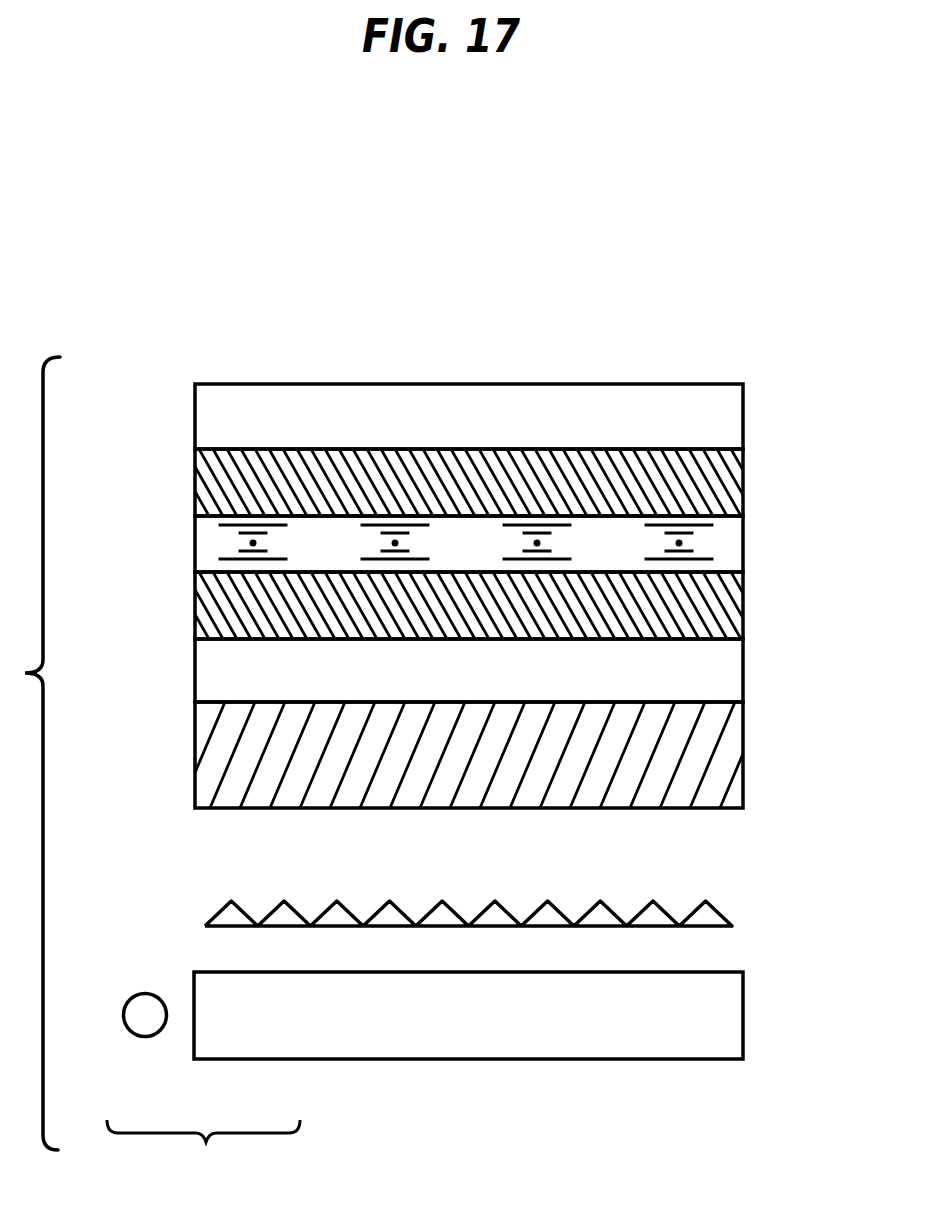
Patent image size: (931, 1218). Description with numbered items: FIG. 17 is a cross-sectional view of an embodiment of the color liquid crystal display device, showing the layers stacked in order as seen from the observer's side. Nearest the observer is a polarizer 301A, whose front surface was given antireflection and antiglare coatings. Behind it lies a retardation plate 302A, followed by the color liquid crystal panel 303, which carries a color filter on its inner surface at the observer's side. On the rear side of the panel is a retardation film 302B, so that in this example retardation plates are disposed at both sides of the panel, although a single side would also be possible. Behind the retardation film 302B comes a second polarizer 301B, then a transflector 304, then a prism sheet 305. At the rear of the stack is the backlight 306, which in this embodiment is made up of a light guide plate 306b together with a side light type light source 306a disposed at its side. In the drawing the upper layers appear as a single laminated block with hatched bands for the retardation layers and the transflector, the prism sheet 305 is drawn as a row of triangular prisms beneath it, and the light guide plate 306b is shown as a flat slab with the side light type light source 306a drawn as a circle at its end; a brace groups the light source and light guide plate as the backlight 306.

The polarizer 301A is at (733, 414).
The retardation plate 302A is at (733, 477).
The color liquid crystal panel 303 is at (733, 540).
The retardation film 302B is at (733, 603).
The polarizer 301B is at (733, 670).
The transflector 304 is at (733, 755).
The prism sheet 305 is at (722, 911).
The backlight 306 is at (203, 1152).
The side light type light source 306a is at (146, 1037).
The light guide plate 306b is at (262, 1035).